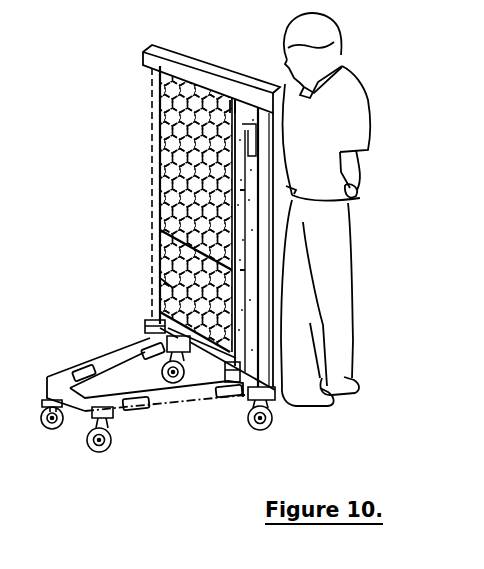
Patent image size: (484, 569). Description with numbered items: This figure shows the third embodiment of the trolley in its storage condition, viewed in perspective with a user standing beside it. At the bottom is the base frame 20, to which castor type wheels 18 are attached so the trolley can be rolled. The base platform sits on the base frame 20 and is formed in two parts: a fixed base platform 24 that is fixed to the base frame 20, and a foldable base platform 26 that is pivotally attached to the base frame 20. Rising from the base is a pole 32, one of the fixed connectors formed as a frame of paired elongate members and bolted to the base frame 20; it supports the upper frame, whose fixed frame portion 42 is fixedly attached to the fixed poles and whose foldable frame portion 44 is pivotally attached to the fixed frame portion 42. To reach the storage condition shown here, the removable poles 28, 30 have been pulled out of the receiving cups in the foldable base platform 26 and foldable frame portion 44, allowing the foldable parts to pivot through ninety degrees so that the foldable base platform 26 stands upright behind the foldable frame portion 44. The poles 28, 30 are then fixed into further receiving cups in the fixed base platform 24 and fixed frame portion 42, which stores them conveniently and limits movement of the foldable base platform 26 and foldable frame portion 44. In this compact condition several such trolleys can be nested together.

The wheels 18 is at (43, 428).
The base frame 20 is at (162, 407).
The fixed base platform 24 is at (145, 326).
The foldable base platform 26 is at (160, 266).
The pole 28 is at (226, 336).
The pole 30 is at (153, 294).
The pole 32 is at (273, 148).
The fixed frame portion 42 is at (143, 52).
The foldable frame portion 44 is at (160, 139).